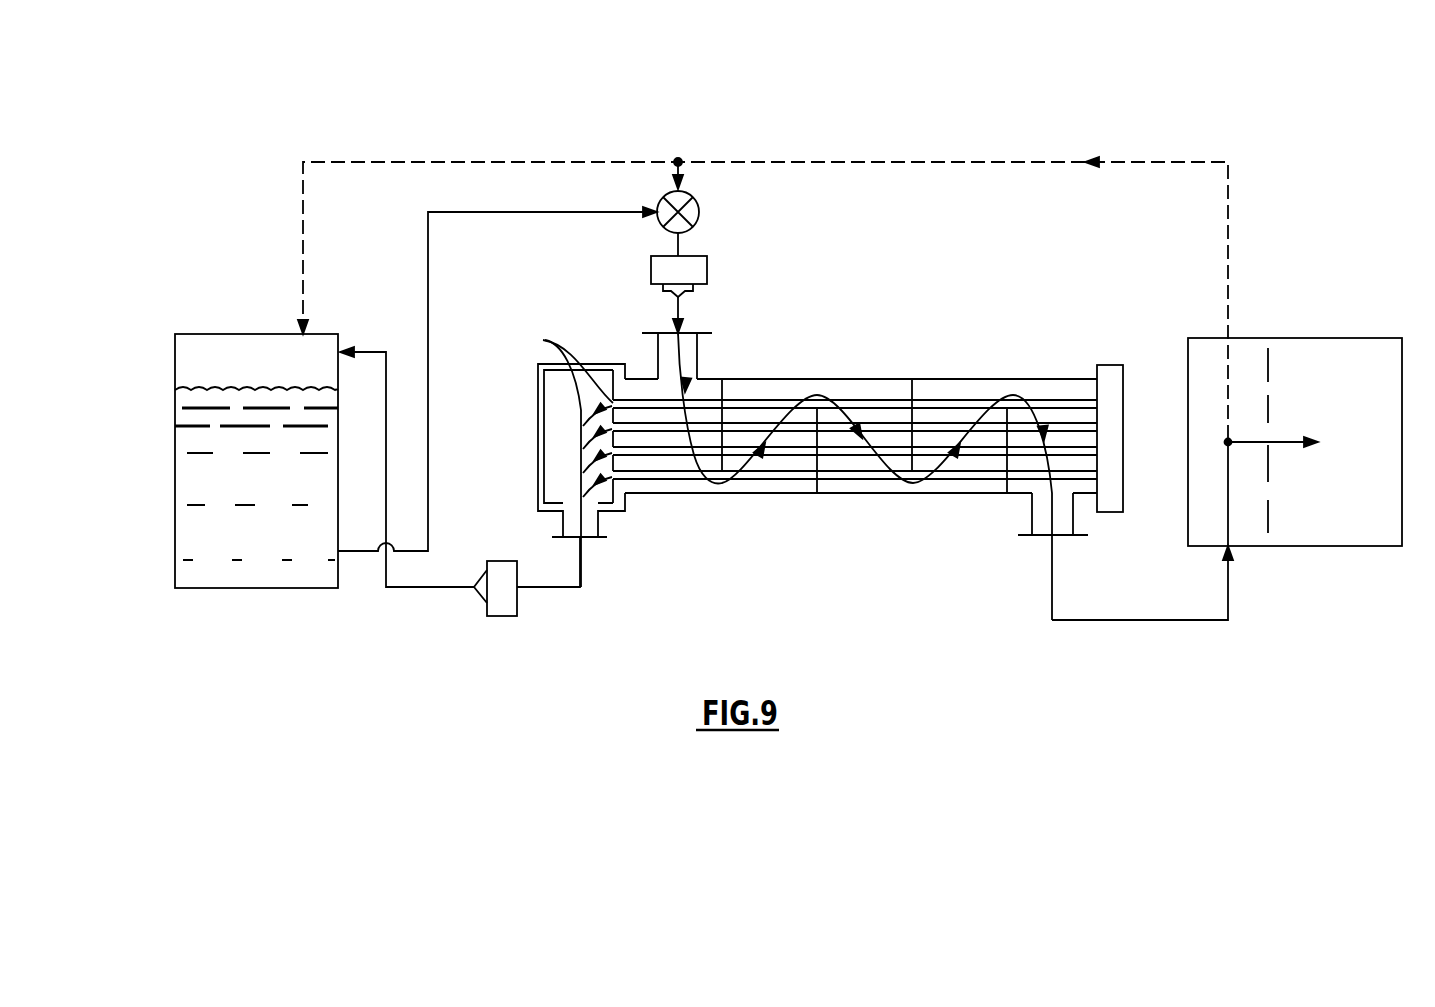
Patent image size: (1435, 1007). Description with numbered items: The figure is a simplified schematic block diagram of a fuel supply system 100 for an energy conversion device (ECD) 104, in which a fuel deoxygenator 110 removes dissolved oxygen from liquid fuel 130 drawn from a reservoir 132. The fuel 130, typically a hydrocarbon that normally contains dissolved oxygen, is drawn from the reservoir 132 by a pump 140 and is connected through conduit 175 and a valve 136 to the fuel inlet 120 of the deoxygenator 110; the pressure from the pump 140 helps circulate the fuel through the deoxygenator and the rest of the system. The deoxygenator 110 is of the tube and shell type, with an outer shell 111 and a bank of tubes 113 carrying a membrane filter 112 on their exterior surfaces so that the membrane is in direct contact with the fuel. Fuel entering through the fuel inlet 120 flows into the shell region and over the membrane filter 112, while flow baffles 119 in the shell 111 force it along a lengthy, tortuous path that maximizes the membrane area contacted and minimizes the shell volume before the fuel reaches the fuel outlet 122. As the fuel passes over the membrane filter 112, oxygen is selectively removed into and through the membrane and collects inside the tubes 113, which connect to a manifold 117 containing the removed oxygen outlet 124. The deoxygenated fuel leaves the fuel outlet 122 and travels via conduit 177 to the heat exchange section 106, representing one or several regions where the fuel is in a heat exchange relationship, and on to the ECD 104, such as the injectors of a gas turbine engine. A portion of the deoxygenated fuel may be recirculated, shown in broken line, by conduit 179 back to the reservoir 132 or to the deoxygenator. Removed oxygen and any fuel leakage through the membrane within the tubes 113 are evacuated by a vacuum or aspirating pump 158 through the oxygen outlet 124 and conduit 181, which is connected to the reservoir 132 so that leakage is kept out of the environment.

The fuel supply system 100 is at (722, 92).
The energy conversion device (ECD) 104 is at (1338, 333).
The heat exchange section 106 is at (1258, 350).
The deoxygenator 110 is at (868, 360).
The shell 111 is at (1002, 380).
The membrane filter 112 is at (760, 402).
The tubes 113 is at (554, 457).
The manifold 117 is at (538, 437).
The flow baffles 119 is at (722, 388).
The fuel inlet 120 is at (690, 333).
The fuel outlet 122 is at (1032, 521).
The removed oxygen outlet 124 is at (590, 537).
The liquid fuel 130 is at (205, 488).
The reservoir 132 is at (175, 425).
The valve 136 is at (699, 205).
The pump 140 is at (707, 273).
The vacuum or aspirating pump 158 is at (500, 616).
The conduit 175 is at (428, 285).
The conduit 177 is at (1172, 622).
The conduit 179 is at (738, 162).
The conduit 181 is at (418, 590).